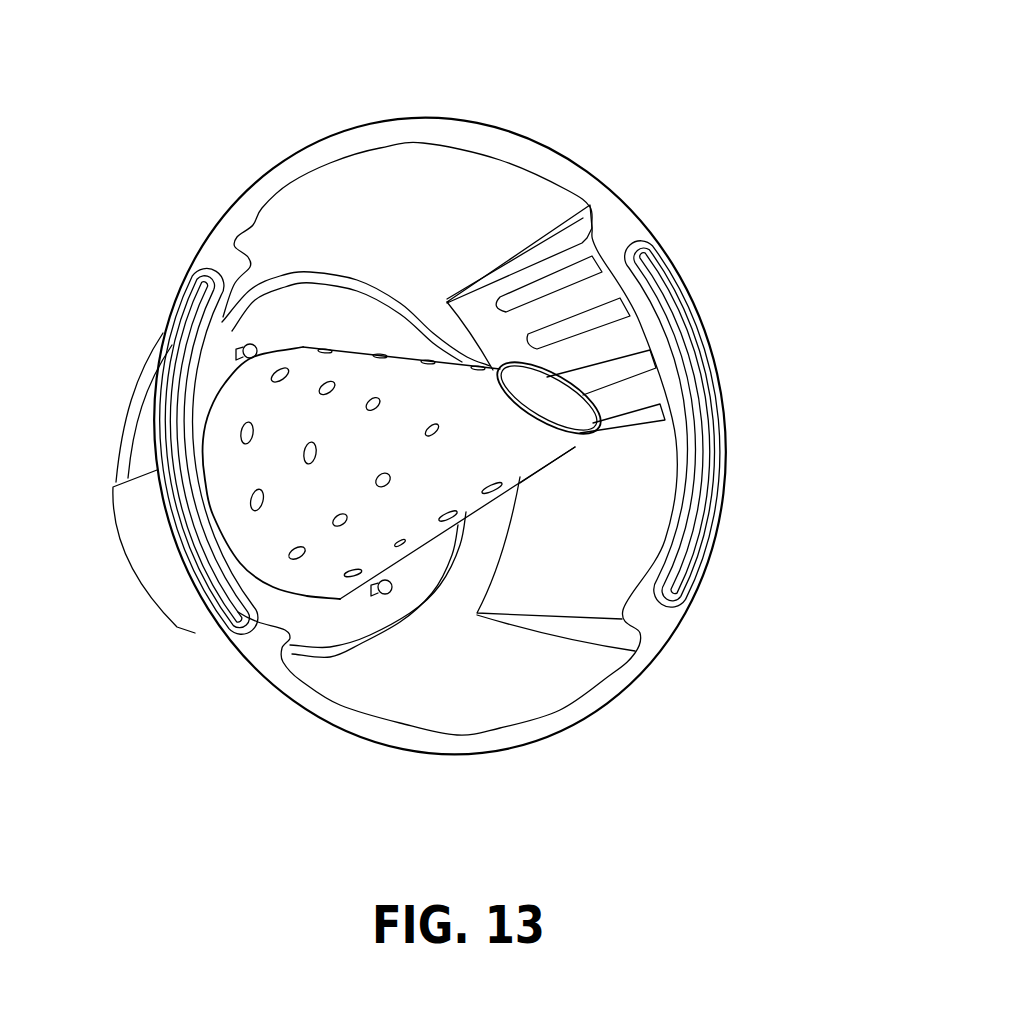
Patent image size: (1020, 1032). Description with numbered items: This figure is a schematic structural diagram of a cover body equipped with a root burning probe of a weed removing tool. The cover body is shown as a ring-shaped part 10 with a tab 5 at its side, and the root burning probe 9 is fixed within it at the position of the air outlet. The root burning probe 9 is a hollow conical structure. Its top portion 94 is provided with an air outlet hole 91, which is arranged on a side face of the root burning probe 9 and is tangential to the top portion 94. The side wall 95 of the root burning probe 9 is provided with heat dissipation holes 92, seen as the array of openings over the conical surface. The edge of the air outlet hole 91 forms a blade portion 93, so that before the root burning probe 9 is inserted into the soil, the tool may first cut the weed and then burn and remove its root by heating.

The flange tab 5 is at (118, 524).
The root burning probe 9 is at (452, 465).
The ring frame 10 is at (703, 510).
The air outlet hole 91 is at (547, 400).
The heat dissipation holes 92 is at (333, 382).
The blade portion 93 is at (510, 370).
The top portion 94 is at (572, 447).
The side wall 95 is at (407, 515).